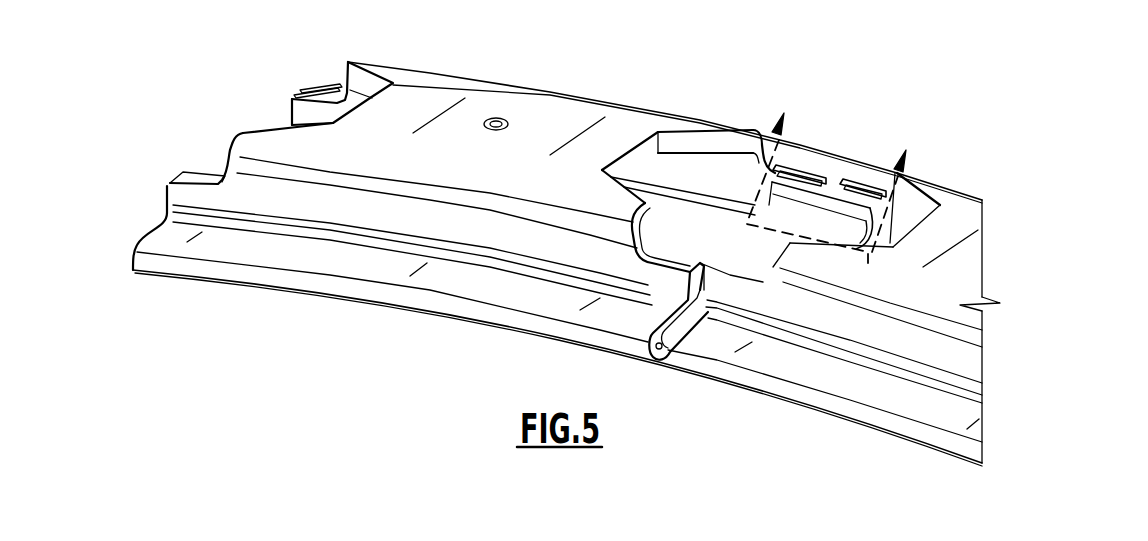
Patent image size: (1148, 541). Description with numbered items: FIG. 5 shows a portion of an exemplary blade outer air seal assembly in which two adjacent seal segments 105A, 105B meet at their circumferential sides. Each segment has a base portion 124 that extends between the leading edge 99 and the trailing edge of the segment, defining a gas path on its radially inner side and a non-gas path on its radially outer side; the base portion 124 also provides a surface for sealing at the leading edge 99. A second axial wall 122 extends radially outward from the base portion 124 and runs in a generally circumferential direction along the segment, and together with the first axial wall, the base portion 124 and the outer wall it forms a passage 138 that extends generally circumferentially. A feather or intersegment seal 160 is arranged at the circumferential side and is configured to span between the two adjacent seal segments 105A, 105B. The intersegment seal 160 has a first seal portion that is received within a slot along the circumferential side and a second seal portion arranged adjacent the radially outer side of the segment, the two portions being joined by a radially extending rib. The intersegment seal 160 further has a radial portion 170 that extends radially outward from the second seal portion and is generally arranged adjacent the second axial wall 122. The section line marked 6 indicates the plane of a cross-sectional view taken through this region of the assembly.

The seal segment 105A is at (832, 377).
The seal segment 105B is at (585, 112).
The leading edge 99 is at (518, 330).
The passage 138 is at (655, 170).
The base portion 124 is at (703, 213).
The second axial wall 122 is at (758, 152).
The radial portion 170 is at (810, 200).
The intersegment seal 160 is at (707, 323).
The section line 6- 6 is at (833, 176).